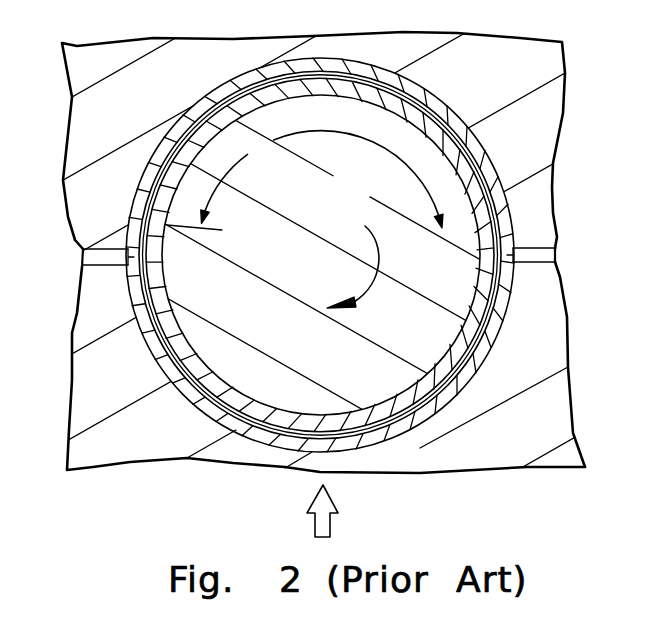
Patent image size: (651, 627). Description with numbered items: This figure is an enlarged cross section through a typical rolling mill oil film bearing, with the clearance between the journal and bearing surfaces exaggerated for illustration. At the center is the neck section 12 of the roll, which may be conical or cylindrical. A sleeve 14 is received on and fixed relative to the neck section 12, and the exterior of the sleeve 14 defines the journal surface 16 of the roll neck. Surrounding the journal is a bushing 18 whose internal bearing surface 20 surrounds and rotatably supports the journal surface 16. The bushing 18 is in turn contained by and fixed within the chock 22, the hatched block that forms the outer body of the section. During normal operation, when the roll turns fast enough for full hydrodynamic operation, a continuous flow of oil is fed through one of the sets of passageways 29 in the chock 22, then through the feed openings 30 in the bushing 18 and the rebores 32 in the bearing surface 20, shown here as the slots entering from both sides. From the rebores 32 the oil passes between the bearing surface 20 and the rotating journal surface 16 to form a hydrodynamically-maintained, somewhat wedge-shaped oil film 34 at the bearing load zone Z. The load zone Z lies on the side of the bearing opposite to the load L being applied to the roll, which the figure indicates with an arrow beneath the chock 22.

The neck section 12 is at (361, 196).
The sleeve 14 is at (367, 92).
The journal surface 16 is at (417, 413).
The bushing 18 is at (210, 107).
The bearing surface 20 is at (382, 428).
The chock 22 is at (488, 57).
The passageways 29 is at (83, 266).
The feed openings 30 is at (128, 250).
The rebores 32 is at (135, 253).
The oil film 34 is at (272, 66).
The bearing load zone Z is at (322, 219).
The load L is at (315, 531).